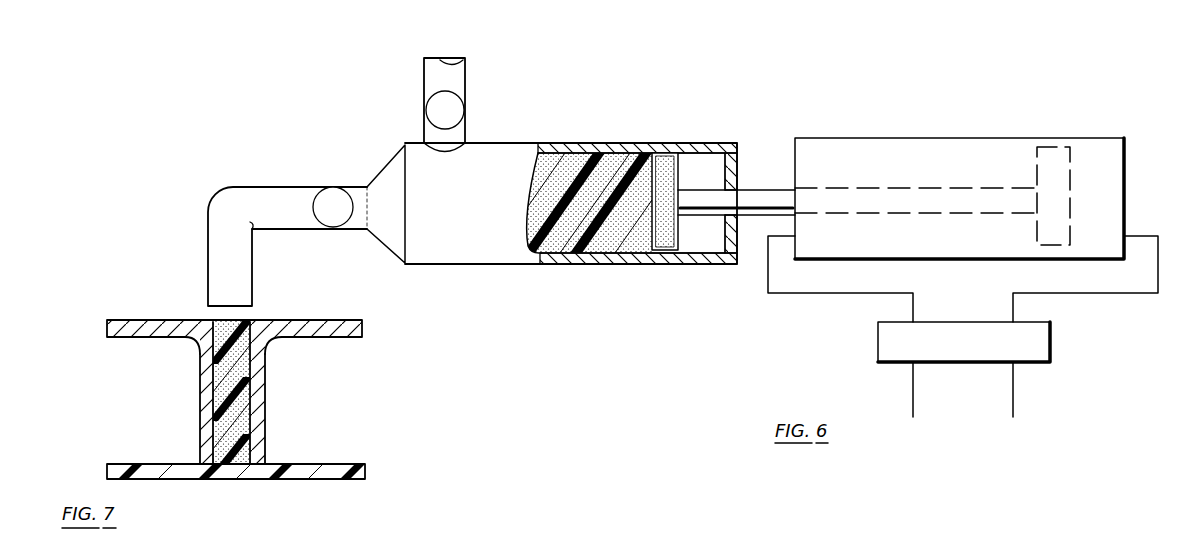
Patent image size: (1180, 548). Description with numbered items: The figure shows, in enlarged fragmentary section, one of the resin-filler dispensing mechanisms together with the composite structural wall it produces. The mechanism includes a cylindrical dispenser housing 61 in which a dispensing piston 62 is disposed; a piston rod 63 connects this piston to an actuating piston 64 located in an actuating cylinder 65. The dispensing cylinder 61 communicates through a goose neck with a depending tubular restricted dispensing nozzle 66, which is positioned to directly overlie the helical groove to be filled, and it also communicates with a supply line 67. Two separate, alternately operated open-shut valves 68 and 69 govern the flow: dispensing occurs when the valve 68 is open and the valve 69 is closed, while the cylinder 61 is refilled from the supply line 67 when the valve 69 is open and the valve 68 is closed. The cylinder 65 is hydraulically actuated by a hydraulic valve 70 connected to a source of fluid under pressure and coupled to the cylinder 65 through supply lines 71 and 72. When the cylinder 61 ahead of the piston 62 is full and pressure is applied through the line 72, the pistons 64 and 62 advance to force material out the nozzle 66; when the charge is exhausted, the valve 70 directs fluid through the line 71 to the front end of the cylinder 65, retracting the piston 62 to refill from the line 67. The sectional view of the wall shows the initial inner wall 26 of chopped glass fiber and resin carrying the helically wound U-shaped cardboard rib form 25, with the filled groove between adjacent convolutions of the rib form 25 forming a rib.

In FIG. 7, the rib form 25 is at (266, 405).
In FIG. 7, the initial inner wall 26 is at (228, 468).
In FIG. 6, the dispensing cylinder 61 is at (473, 252).
In FIG. 6, the dispensing piston 62 is at (663, 166).
In FIG. 6, the piston rod 63 is at (766, 201).
In FIG. 6, the actuating piston 64 is at (1067, 183).
In FIG. 6, the actuating cylinder 65 is at (950, 248).
In FIG. 6, the dispensing nozzle 66 is at (215, 307).
In FIG. 6, the supply line 67 is at (457, 84).
In FIG. 6, the open-shut valve 68 is at (328, 196).
In FIG. 6, the open-shut valve 69 is at (464, 113).
In FIG. 6, the hydraulic valve 70 is at (958, 352).
In FIG. 6, the supply line 71 is at (803, 295).
In FIG. 6, the supply line 72 is at (1100, 295).